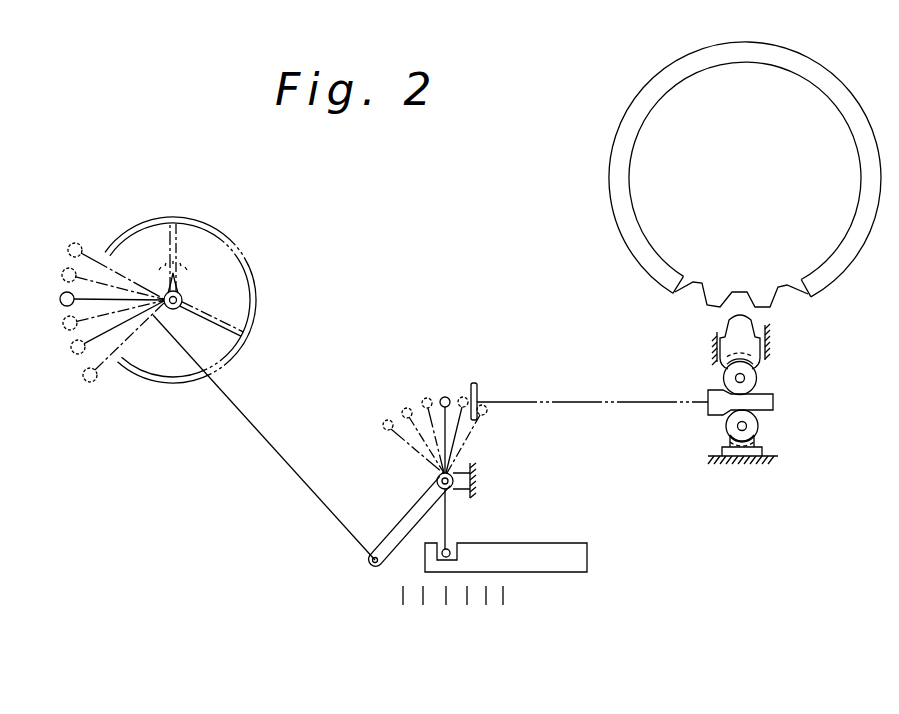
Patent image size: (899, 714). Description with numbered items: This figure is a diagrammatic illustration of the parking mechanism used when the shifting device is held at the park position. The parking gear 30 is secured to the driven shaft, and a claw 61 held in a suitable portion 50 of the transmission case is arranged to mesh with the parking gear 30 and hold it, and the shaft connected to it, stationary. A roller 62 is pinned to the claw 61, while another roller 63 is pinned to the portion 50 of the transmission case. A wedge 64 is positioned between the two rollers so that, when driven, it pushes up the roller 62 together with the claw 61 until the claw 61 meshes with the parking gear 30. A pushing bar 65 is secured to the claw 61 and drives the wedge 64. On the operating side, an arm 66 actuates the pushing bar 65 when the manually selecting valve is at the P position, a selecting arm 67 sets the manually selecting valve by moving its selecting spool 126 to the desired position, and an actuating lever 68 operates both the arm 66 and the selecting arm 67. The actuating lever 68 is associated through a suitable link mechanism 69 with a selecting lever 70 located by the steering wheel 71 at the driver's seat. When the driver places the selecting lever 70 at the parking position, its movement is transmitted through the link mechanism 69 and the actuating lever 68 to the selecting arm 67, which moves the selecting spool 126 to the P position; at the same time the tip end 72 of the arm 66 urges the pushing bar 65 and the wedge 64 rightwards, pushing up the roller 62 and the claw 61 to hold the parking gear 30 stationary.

The parking gear 30 is at (637, 260).
The portion of the transmission case 50 is at (772, 342).
The claw 61 is at (728, 326).
The roller 62 is at (758, 378).
The roller 63 is at (759, 423).
The wedge 64 is at (718, 417).
The pushing bar 65 is at (575, 404).
The arm 66 is at (444, 420).
The selecting arm 67 is at (449, 519).
The actuating lever 68 is at (407, 510).
The link mechanism 69 is at (280, 458).
The selecting lever 70 is at (87, 296).
The steering wheel 71 is at (205, 228).
The tip end of the arm 72 is at (445, 396).
The selecting spool 126 is at (570, 571).